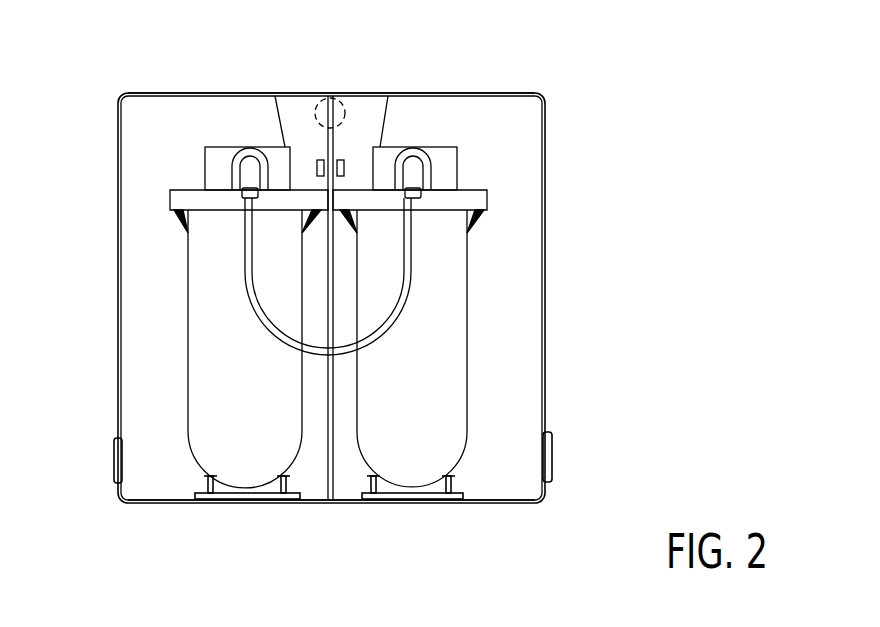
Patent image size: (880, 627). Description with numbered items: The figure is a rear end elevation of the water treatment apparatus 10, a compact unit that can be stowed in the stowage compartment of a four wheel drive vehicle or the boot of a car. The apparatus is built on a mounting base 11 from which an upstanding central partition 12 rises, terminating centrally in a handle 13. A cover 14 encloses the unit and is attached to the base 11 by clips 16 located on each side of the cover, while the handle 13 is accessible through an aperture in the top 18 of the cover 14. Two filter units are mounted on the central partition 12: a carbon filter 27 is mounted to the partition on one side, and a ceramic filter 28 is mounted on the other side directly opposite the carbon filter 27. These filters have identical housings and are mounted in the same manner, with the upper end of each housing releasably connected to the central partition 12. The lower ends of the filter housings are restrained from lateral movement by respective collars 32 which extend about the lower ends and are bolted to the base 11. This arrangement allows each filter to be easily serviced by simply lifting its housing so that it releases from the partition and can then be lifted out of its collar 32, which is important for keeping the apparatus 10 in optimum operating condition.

The water treatment apparatus 10 is at (585, 97).
The mounting base 11 is at (151, 499).
The central partition 12 is at (332, 458).
The handle 13 is at (349, 100).
The cover 14 is at (545, 302).
The clips 16 is at (114, 442).
The top of the cover 18 is at (167, 92).
The carbon filter 27 is at (203, 268).
The ceramic filter 28 is at (443, 352).
The collars 32 is at (275, 488).